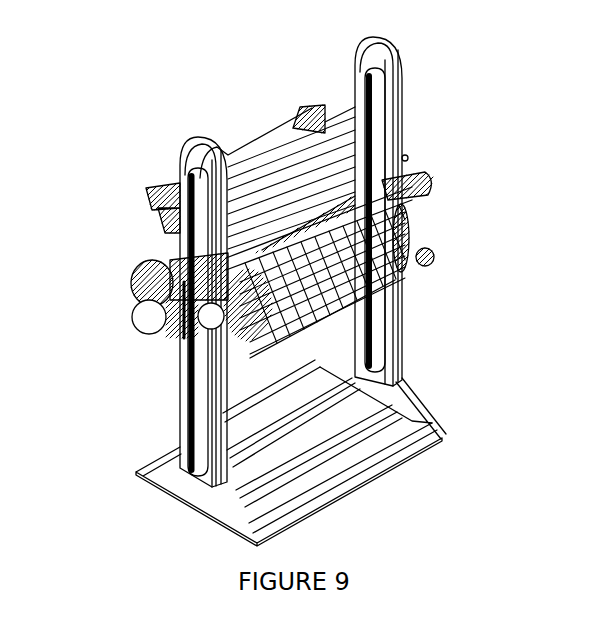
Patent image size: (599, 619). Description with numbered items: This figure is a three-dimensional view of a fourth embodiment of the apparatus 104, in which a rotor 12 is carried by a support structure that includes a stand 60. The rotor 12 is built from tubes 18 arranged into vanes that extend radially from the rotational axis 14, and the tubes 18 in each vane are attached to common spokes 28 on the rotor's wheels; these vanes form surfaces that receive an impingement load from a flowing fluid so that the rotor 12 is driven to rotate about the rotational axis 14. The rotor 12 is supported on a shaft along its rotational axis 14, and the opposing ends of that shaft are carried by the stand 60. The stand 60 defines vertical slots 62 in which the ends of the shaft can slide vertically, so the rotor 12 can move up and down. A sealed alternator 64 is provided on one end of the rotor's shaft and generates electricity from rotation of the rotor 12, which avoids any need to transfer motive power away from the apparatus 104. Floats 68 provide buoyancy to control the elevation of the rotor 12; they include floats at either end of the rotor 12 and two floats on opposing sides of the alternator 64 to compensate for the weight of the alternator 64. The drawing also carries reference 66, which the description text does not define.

The roller assembly 104 is at (103, 73).
The rotor 12 is at (252, 120).
The rotational axis 14 is at (150, 314).
The tubes 18 is at (412, 200).
The spokes 28 is at (428, 257).
The stand 60 is at (402, 350).
The vertical slots 62 is at (379, 93).
The sealed alternator 64 is at (152, 263).
The collar 66 is at (404, 157).
The floats 68 is at (132, 282).